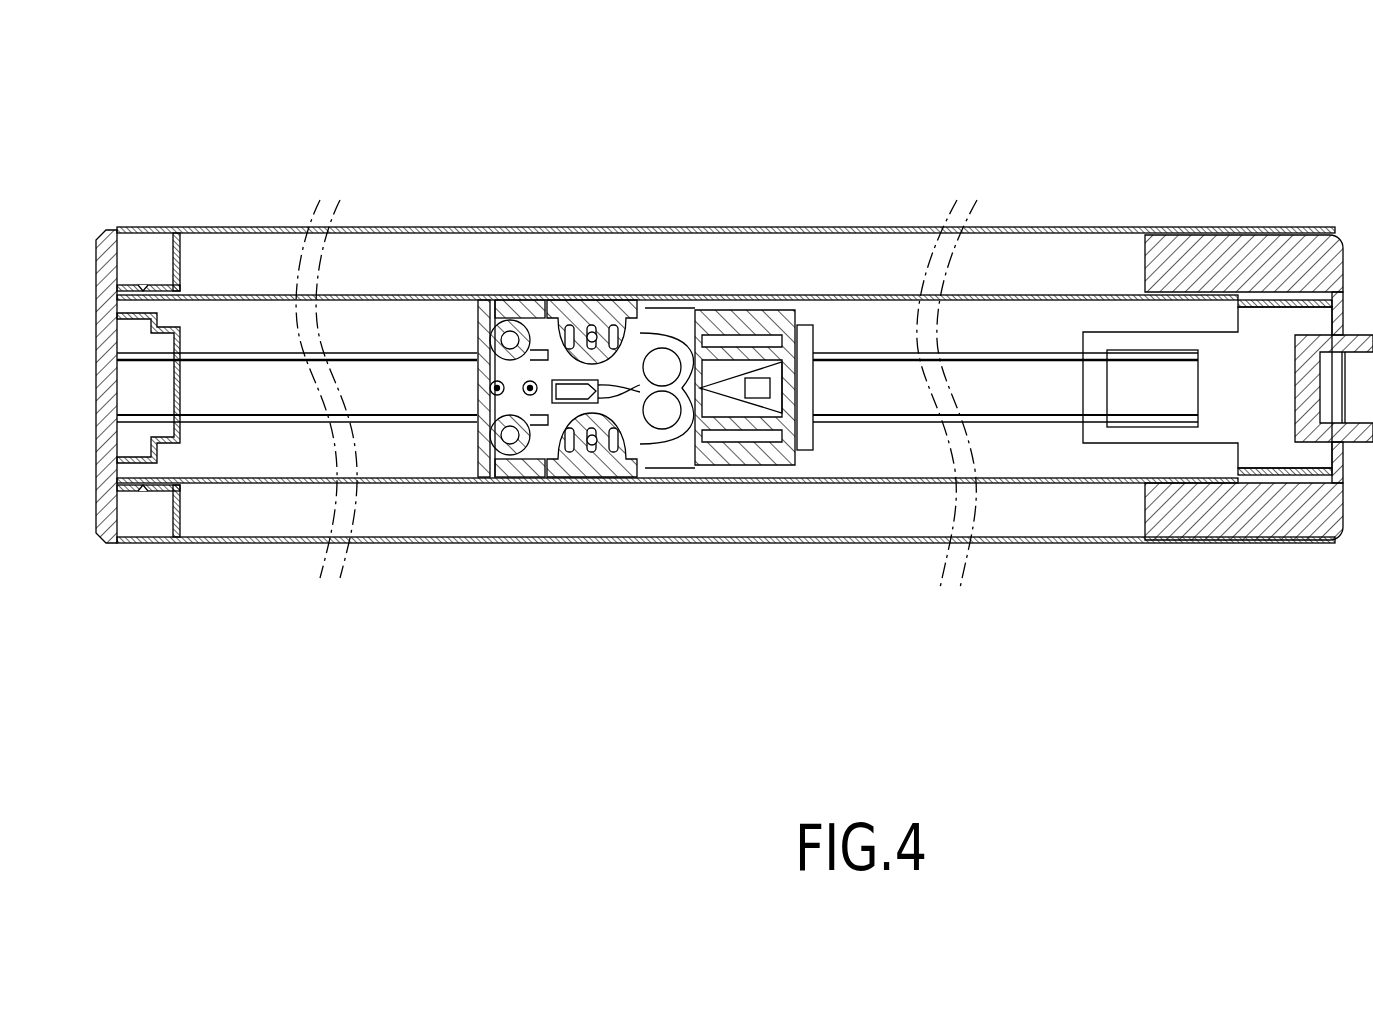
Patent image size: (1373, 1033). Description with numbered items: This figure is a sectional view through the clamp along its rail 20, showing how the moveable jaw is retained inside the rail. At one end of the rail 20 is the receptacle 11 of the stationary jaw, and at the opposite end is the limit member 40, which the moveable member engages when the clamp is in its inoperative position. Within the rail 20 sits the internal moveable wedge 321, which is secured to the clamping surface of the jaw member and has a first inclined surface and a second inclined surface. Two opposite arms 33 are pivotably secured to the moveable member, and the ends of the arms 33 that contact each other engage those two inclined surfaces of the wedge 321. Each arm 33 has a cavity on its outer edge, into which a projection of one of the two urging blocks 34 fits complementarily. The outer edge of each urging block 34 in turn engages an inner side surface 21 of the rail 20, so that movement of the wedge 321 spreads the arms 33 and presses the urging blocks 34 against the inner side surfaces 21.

The receptacle 11 is at (1265, 517).
The rail 20 is at (715, 228).
The inner side surface 21 is at (820, 300).
The arm 33 is at (548, 443).
The urging block 34 is at (588, 465).
The internal moveable wedge 321 is at (683, 405).
The limit member 40 is at (95, 450).